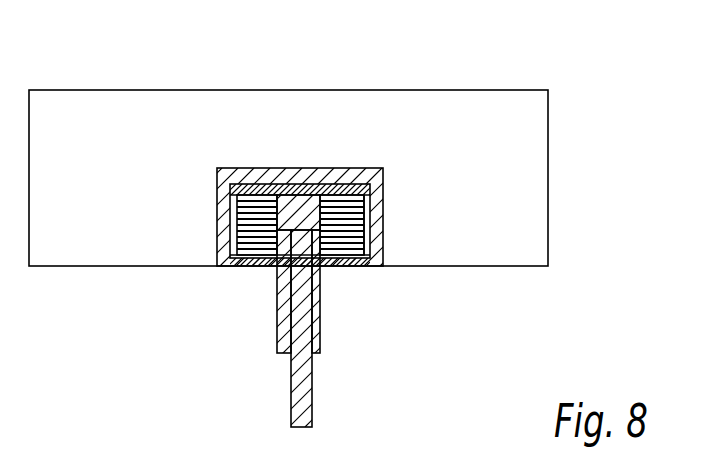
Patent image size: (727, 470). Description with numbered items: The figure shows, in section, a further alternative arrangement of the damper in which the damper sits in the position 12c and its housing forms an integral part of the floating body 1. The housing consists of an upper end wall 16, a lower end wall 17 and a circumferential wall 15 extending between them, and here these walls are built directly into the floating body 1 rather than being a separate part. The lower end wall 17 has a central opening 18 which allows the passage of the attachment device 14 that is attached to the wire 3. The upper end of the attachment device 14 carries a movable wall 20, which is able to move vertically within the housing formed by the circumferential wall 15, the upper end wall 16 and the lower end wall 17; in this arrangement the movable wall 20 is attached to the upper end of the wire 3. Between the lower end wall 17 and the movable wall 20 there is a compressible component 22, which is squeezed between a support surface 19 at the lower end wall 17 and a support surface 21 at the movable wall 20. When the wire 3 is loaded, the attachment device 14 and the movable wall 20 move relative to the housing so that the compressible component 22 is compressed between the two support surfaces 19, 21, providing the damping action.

The floating body 1 is at (427, 102).
The wire 3 is at (312, 396).
The damper position 12c is at (205, 303).
The attachment device 14 is at (280, 325).
The circumferential wall 15 is at (373, 192).
The upper end wall 16 is at (248, 187).
The lower end wall 17 is at (365, 262).
The central opening 18 is at (310, 268).
The support surface 19 is at (348, 260).
The movable wall 20 is at (295, 192).
The support surface 21 is at (346, 203).
The compressible component 22 is at (373, 223).